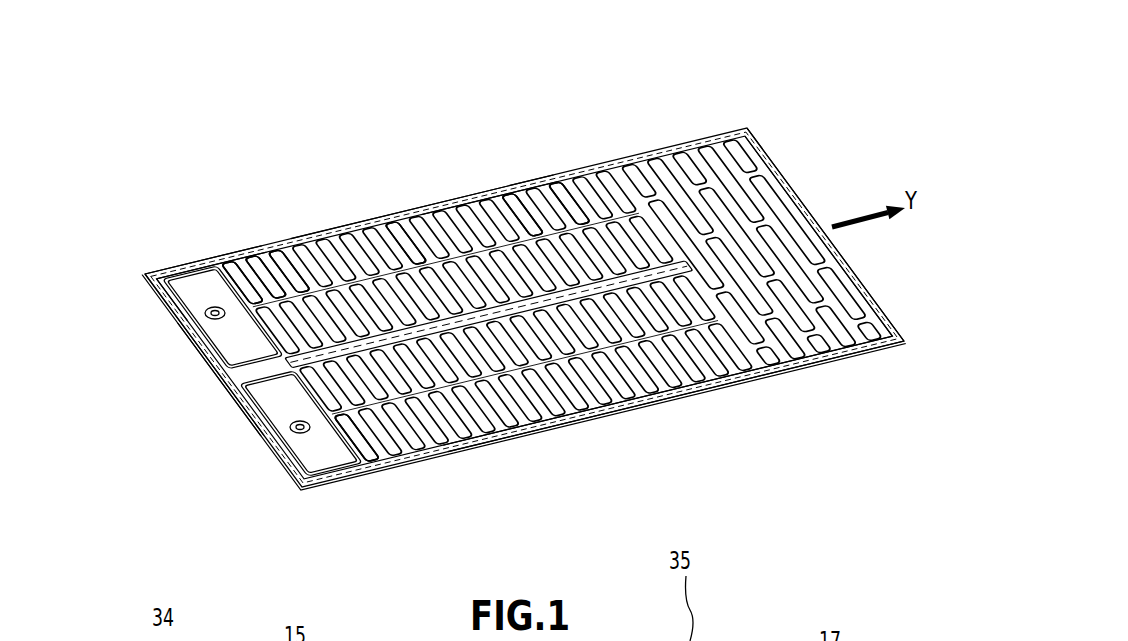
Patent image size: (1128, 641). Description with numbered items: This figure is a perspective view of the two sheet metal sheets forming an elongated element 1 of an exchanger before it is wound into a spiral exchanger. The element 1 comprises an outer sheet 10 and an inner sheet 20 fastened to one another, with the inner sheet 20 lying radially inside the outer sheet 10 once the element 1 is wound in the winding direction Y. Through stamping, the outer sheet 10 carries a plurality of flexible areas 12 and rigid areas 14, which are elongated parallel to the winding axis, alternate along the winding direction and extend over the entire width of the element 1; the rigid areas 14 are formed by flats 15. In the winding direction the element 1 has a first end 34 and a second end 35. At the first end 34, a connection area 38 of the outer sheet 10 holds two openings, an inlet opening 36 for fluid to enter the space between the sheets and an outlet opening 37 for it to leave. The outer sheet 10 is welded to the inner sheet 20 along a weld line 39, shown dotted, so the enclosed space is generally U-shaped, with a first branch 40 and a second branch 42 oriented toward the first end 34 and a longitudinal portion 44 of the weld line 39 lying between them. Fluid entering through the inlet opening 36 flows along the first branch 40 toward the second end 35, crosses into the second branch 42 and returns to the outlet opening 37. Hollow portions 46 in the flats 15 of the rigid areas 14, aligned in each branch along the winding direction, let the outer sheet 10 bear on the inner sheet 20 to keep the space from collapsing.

The element of an exchanger 1 is at (373, 166).
The outer sheet 10 is at (150, 266).
The flexible areas 12 is at (433, 181).
The rigid areas 14 is at (487, 284).
The flats 15 is at (572, 312).
The inner sheet 20 is at (718, 402).
The first end 34 is at (177, 222).
The second end 35 is at (775, 100).
The first or inlet opening 36 is at (284, 404).
The second or outlet opening 37 is at (198, 310).
The connection area 38 is at (158, 254).
The weld line 39 is at (208, 350).
The first branch 40 is at (512, 440).
The second branch 42 is at (497, 170).
The longitudinal portion of the weld line 44 is at (443, 234).
The hollow portions 46 is at (405, 224).